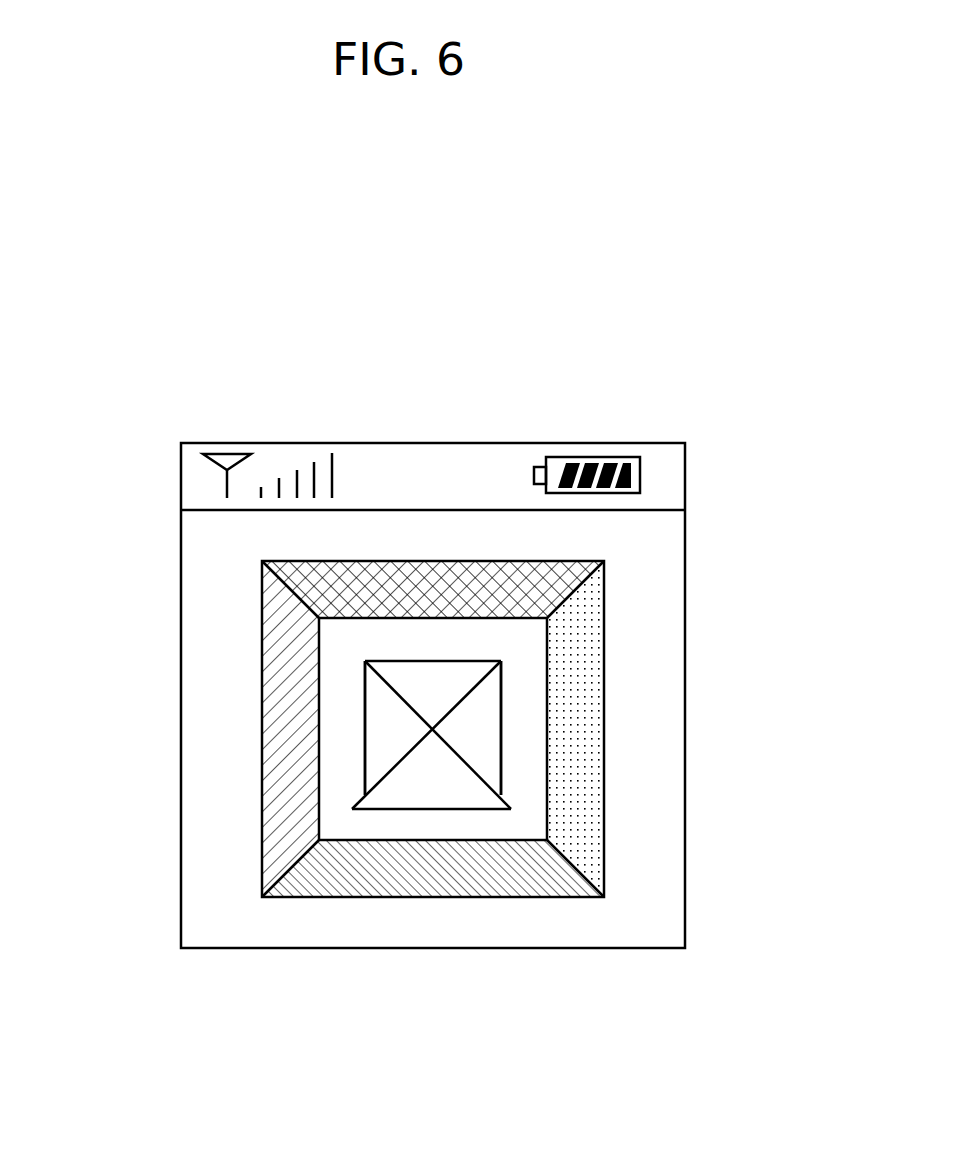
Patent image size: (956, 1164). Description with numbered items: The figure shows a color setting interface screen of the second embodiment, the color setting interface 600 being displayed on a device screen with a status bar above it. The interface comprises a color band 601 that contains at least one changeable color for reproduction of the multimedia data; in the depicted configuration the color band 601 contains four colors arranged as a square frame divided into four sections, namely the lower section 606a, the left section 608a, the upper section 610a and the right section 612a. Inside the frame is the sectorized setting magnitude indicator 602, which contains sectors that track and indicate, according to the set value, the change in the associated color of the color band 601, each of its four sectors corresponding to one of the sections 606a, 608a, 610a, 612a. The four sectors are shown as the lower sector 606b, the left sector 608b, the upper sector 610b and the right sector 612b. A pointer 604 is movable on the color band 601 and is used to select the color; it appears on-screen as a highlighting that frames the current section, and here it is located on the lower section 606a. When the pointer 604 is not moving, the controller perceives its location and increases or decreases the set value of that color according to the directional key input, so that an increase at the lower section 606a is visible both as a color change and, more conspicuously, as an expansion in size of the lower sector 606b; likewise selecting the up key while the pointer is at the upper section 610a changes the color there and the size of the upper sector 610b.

The color setting interface 600 is at (720, 831).
The color band 601 is at (604, 618).
The sectorized setting magnitude indicator 602 is at (501, 668).
The pointer 604 is at (306, 897).
The lower section of the color band 606a is at (414, 877).
The sectorized setting magnitude indicator sector for the lower section 606b is at (480, 795).
The section of the color band 608a is at (290, 693).
The sectorized setting magnitude indicator sector 608b is at (378, 752).
The upper section of the color band 610a is at (396, 583).
The sectorized setting magnitude indicator sector for the upper section 610b is at (462, 677).
The section of the color band 612a is at (588, 710).
The sectorized setting magnitude indicator sector 612b is at (483, 762).